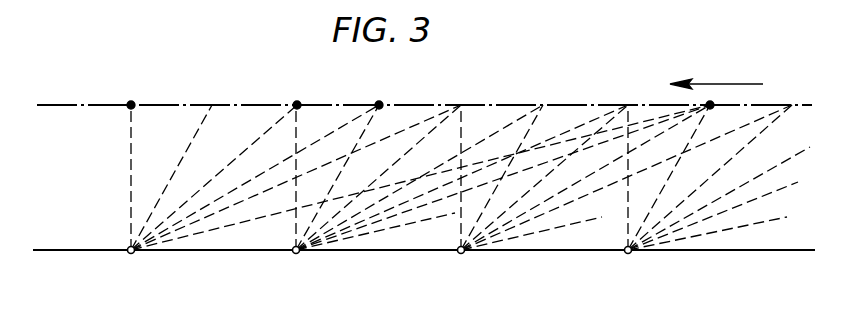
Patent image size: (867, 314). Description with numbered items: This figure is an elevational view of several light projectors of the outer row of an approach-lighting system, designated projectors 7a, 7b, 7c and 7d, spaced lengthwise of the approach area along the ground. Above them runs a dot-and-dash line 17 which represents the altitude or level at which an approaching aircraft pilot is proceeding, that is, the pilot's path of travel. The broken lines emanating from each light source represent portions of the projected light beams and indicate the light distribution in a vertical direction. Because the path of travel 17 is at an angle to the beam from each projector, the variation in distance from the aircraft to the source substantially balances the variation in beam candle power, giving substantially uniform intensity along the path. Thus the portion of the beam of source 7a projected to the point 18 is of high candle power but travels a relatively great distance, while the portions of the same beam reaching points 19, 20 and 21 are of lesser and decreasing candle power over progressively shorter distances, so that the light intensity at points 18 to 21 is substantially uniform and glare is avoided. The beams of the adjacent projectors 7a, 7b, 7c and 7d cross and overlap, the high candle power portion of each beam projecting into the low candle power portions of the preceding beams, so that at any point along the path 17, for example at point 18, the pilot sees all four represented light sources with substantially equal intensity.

The projector 7a is at (157, 279).
The projector 7b is at (333, 283).
The projector 7c is at (503, 283).
The projector 7d is at (674, 285).
The dot-and-dash line 17 is at (522, 104).
The point 18 is at (712, 106).
The point 19 is at (381, 103).
The point 20 is at (297, 102).
The point 21 is at (132, 102).